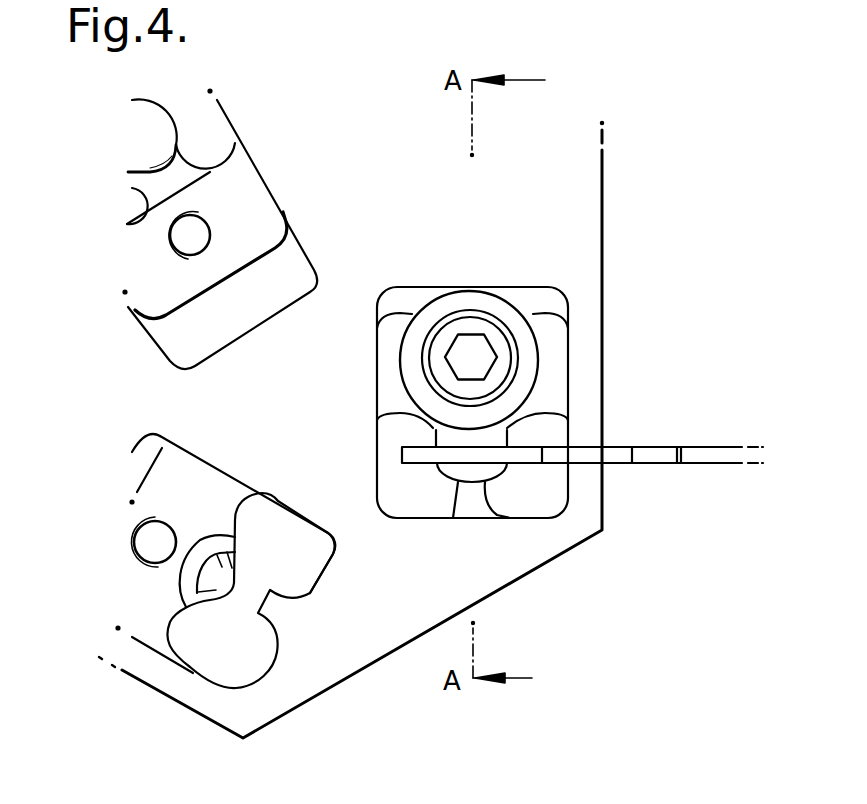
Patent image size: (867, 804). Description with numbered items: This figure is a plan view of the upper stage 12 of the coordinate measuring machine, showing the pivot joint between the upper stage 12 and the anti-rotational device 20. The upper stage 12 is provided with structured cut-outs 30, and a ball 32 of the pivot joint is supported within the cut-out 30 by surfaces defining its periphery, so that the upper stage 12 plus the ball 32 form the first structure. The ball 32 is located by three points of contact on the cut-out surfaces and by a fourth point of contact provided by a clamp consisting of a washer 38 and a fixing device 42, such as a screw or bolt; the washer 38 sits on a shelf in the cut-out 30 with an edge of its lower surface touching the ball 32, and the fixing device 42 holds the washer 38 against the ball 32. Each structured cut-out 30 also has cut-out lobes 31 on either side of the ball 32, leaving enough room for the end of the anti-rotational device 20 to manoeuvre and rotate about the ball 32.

The upper stage 12 is at (585, 190).
The anti-rotational device 20 is at (706, 445).
The structured cut-out 30 is at (568, 385).
The cut-out lobe 31 is at (552, 492).
The ball 32 is at (487, 468).
The washer 38 is at (532, 347).
The fixing device 42 is at (490, 330).